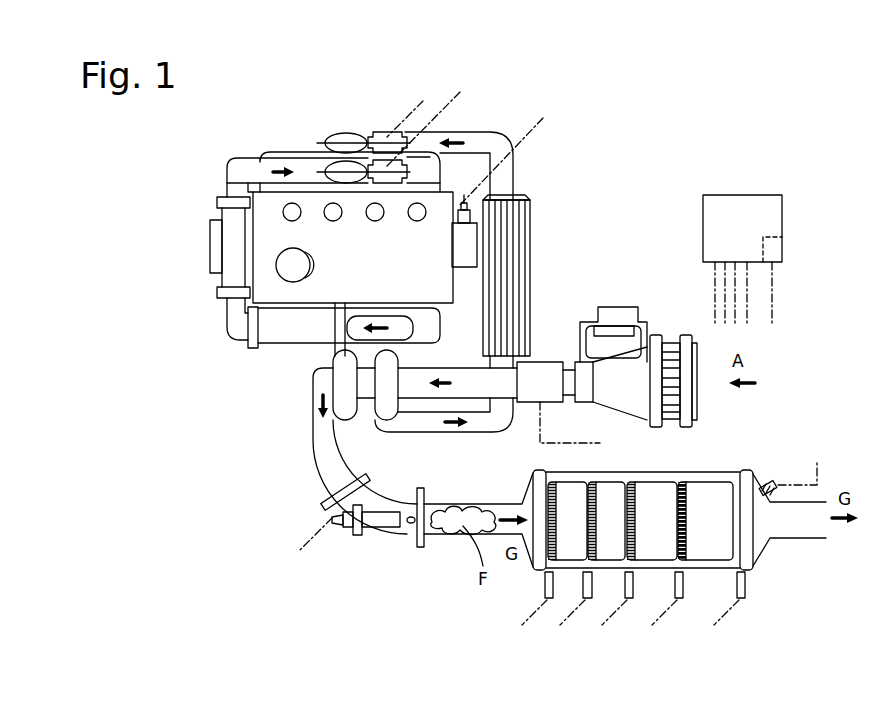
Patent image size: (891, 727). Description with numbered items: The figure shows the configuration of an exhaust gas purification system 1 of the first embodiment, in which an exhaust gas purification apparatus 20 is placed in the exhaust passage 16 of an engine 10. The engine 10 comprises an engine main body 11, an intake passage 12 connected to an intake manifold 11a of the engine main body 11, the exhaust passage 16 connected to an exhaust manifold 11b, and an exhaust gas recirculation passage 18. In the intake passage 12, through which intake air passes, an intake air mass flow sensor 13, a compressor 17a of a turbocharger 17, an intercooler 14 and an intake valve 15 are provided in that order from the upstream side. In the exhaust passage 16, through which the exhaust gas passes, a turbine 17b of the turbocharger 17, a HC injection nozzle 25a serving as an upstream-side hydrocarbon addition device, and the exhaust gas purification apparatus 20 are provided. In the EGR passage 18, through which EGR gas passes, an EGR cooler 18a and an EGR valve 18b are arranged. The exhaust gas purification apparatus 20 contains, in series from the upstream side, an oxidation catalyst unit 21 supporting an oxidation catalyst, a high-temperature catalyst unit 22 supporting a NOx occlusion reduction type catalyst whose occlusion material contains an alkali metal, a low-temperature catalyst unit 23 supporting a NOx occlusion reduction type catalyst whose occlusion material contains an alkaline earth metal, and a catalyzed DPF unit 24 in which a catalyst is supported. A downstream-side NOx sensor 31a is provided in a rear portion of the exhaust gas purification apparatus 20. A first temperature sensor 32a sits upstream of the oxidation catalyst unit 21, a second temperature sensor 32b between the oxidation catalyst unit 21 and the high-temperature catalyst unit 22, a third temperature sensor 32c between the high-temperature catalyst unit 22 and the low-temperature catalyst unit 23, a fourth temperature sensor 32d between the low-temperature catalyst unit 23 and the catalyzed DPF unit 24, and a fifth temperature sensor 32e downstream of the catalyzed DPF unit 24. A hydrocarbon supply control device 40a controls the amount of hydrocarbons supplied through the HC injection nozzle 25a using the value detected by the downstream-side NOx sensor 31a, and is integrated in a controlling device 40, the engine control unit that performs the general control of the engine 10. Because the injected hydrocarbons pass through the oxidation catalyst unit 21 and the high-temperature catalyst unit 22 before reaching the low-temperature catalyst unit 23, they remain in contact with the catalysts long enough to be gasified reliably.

The exhaust gas purification system 1 is at (817, 370).
The engine 10 is at (612, 185).
The engine main body 11 is at (400, 268).
The intake manifold 11a is at (418, 170).
The exhaust manifold 11b is at (425, 318).
The intake passage 12 is at (513, 168).
The intake air mass flow sensor 13 is at (543, 362).
The intercooler 14 is at (528, 225).
The intake valve 15 is at (340, 135).
The exhaust passage 16 is at (318, 466).
The turbocharger 17 is at (367, 388).
The compressor 17a is at (380, 410).
The turbine 17b is at (347, 412).
The EGR passage 18 is at (227, 185).
The EGR cooler 18a is at (230, 235).
The EGR valve 18b is at (328, 170).
The exhaust gas purification apparatus 20 is at (736, 470).
The oxidation catalyst unit 21 is at (583, 536).
The high-temperature catalyst unit 22 is at (622, 536).
The low-temperature catalyst unit 23 is at (665, 536).
The catalyzed DPF unit 24 is at (717, 536).
The HC injection nozzle 25a is at (368, 527).
The downstream-side NOx sensor 31a is at (770, 483).
The first temperature sensor 32a is at (549, 600).
The second temperature sensor 32b is at (590, 600).
The third temperature sensor 32c is at (633, 600).
The fourth temperature sensor 32d is at (680, 600).
The fifth temperature sensor 32e is at (742, 600).
The controlling device 40 is at (744, 237).
The hydrocarbon supply control device 40a is at (775, 257).